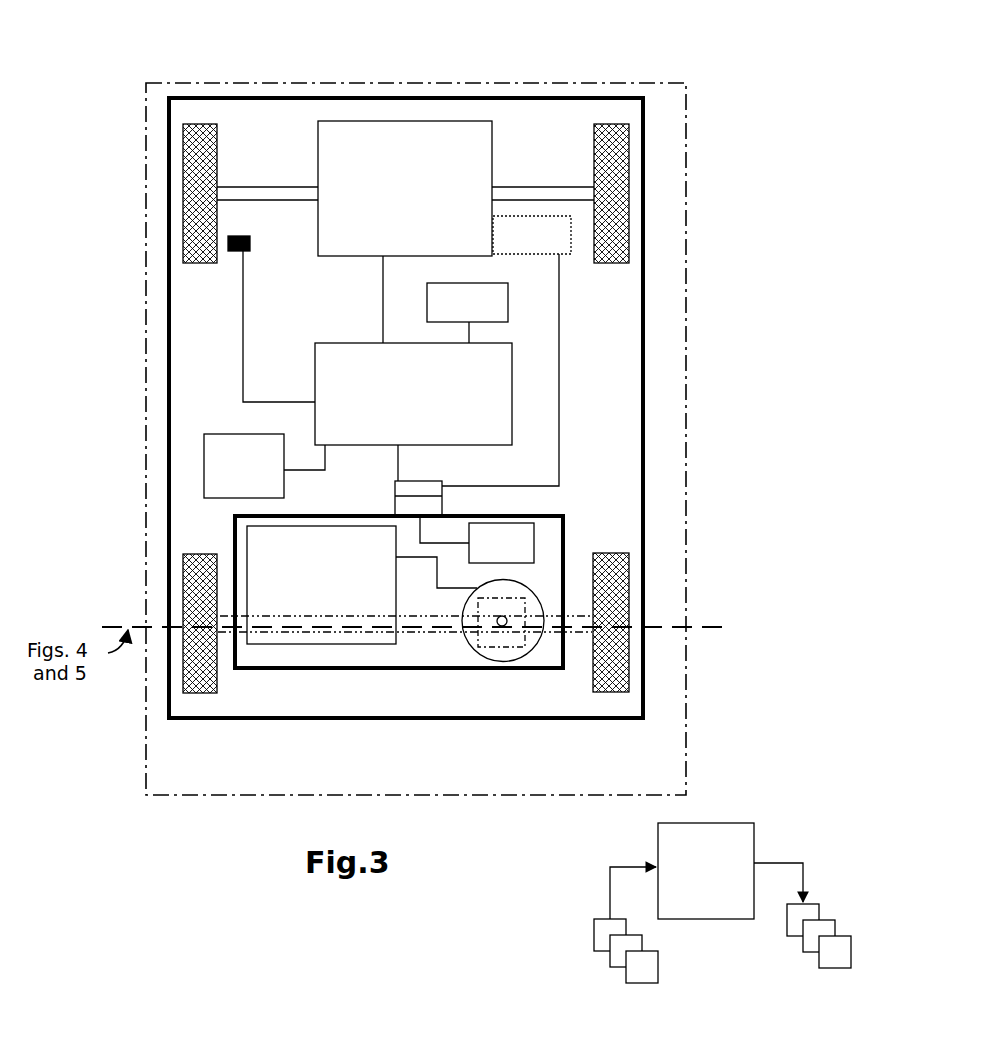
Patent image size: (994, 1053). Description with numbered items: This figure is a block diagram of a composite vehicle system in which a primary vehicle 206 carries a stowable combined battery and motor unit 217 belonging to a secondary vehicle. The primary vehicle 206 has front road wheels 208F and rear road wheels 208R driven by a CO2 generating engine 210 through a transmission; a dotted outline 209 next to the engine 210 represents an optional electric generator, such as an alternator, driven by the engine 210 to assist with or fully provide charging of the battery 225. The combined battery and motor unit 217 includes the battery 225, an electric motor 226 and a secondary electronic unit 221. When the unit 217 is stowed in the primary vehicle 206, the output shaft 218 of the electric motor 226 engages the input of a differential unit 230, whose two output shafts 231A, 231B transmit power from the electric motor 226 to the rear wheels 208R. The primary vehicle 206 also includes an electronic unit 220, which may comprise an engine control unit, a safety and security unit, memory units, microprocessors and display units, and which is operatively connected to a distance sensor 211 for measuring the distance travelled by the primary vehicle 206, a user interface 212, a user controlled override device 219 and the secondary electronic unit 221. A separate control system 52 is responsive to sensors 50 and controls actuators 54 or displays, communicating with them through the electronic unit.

The primary vehicle 206 is at (185, 82).
The front road wheels 208F is at (185, 193).
The rear road wheels 208R is at (183, 578).
The engine 210 is at (405, 232).
The dotted outline 209 is at (506, 351).
The distance sensor 211 is at (248, 250).
The user controlled override device 219 is at (467, 313).
The electronic unit 220 is at (413, 429).
The user interface 212 is at (264, 466).
The combined battery and motor unit 217 is at (322, 635).
The battery 225 is at (362, 585).
The secondary electronic unit 221 is at (501, 543).
The electric motor 226 is at (472, 647).
The output shaft 218 is at (497, 628).
The differential unit 230 is at (495, 650).
The output shaft 231A is at (433, 630).
The output shaft 231B is at (574, 632).
The sensors 50 is at (636, 953).
The control system 52 is at (706, 871).
The actuators 54 is at (818, 943).